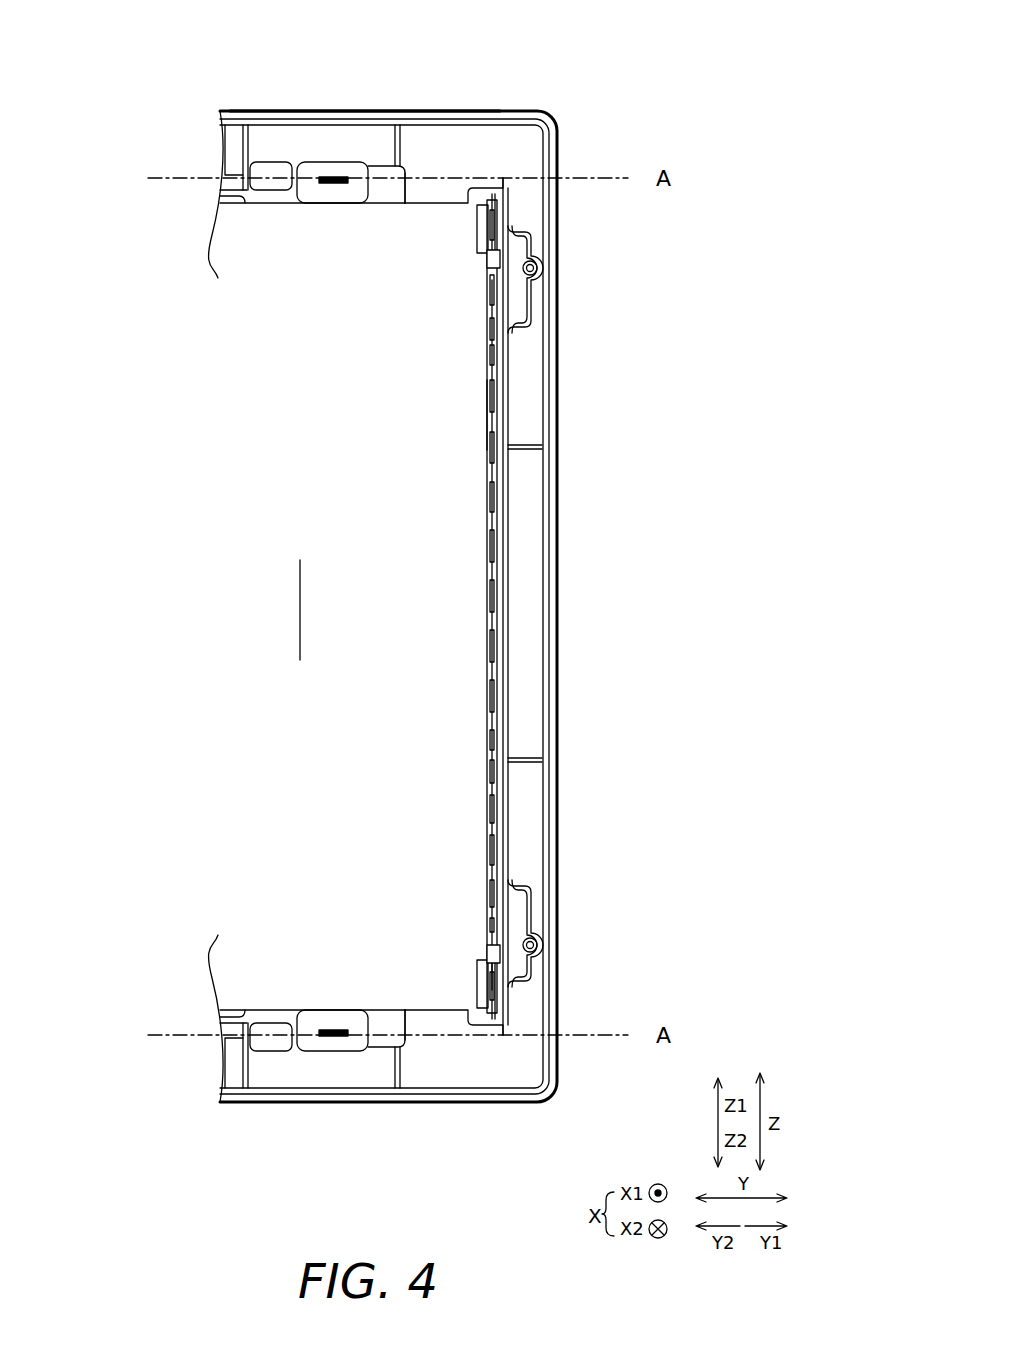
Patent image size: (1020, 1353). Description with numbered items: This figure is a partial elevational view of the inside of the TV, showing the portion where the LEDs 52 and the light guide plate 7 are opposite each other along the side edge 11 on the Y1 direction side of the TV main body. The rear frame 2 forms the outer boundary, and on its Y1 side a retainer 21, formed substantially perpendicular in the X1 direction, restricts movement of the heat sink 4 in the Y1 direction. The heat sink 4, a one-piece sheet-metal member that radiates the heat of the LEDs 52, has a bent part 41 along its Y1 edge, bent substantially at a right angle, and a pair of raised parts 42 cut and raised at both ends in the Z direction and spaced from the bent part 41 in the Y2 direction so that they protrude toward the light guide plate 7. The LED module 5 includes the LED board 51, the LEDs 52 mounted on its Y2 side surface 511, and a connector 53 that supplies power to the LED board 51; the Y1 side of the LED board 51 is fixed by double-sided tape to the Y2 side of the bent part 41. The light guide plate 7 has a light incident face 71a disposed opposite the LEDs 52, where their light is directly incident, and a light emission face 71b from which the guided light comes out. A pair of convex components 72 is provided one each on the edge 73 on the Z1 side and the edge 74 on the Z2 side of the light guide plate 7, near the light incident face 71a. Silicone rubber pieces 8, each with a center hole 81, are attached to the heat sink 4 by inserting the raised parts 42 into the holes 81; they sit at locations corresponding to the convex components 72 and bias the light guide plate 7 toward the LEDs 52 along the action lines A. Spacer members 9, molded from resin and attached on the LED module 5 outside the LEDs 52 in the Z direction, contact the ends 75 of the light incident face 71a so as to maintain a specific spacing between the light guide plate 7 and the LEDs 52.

The rear frame 2 is at (441, 112).
The heat sink 4 is at (272, 197).
The LED module 5 is at (504, 606).
The light guide plate 7 is at (130, 613).
The silicone rubber pieces 8 is at (360, 190).
The spacer members 9 is at (519, 257).
The side edge 11 is at (554, 582).
The retainer 21 is at (508, 660).
The bent part 41 is at (503, 178).
The raised parts 42 is at (335, 178).
The LED board 51 is at (493, 681).
The surface 511 is at (495, 526).
The LEDs 52 is at (487, 455).
The connector 53 is at (490, 227).
The light incident face 71a is at (487, 416).
The light emission face 71b is at (340, 605).
The convex components 72 is at (380, 188).
The edge 73 is at (247, 203).
The edge 74 is at (243, 1016).
The ends 75 is at (486, 266).
The holes 81 is at (320, 184).